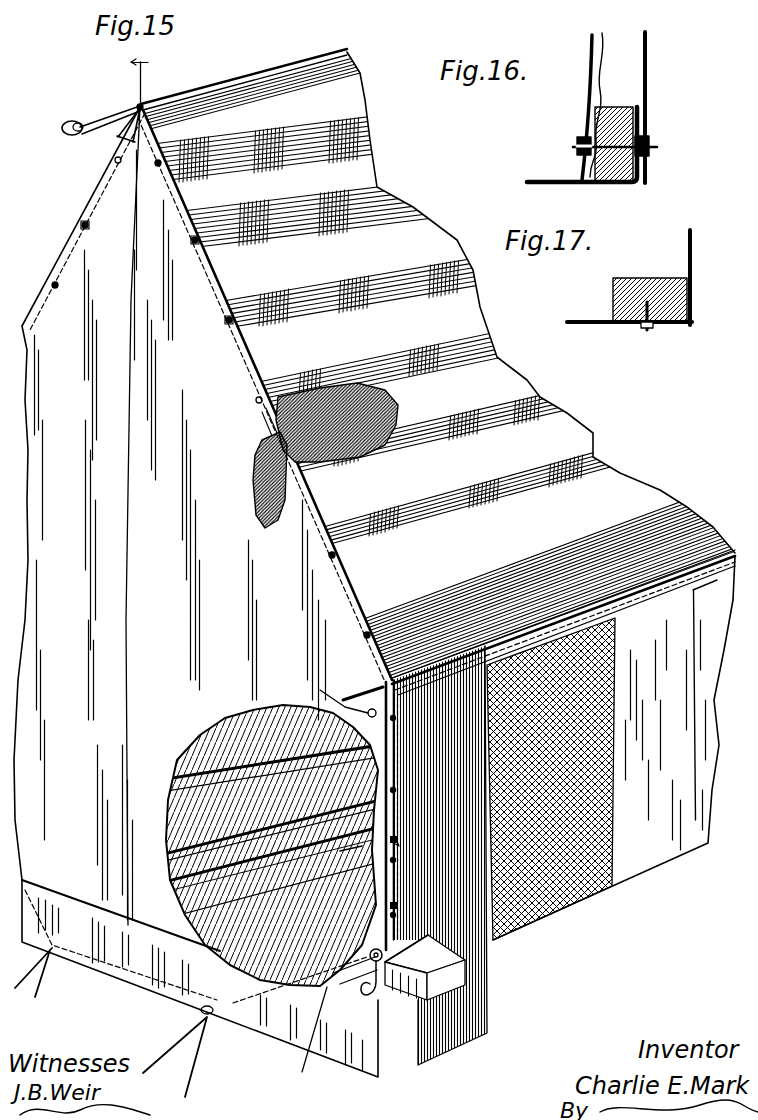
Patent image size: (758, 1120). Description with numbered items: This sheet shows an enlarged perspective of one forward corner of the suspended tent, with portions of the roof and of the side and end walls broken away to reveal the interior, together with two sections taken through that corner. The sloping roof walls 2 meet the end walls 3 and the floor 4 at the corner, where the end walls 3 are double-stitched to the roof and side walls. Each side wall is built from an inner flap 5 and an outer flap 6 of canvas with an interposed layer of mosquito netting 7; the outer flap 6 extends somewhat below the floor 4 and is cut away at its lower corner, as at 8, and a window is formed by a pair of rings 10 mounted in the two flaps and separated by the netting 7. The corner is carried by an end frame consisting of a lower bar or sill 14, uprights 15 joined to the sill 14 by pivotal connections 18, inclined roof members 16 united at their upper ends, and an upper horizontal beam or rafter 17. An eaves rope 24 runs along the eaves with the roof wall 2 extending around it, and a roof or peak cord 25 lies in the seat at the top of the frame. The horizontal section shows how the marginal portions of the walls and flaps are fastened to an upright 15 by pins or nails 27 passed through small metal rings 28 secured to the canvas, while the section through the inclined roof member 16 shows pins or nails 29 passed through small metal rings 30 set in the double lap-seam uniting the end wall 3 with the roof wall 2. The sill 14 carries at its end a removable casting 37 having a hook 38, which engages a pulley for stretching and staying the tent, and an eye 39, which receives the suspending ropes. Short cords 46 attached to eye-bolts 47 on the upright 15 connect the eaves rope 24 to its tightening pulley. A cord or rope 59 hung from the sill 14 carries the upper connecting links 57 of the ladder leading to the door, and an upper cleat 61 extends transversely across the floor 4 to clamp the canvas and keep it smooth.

In FIG. 15, the sloping roof walls 2 is at (478, 340).
In FIG. 15, the end walls 3 is at (196, 546).
In FIG. 16, the end walls 3 is at (552, 186).
In FIG. 17, the end walls 3 is at (592, 326).
In FIG. 15, the floor 4 is at (305, 900).
In FIG. 15, the inner flap 5 is at (480, 1018).
In FIG. 16, the inner flap 5 is at (648, 172).
In FIG. 15, the outer flap 6 is at (636, 872).
In FIG. 16, the outer flap 6 is at (584, 91).
In FIG. 15, the layer of mosquito netting 7 is at (567, 918).
In FIG. 16, the layer of mosquito netting 7 is at (601, 93).
In FIG. 15, the cut-away lower corner 8 is at (397, 1055).
In FIG. 15, the rings 10 is at (347, 840).
In FIG. 15, the sill 14 is at (458, 977).
In FIG. 16, the uprights 15 is at (624, 180).
In FIG. 15, the inclined roof members 16 is at (303, 390).
In FIG. 17, the inclined roof members 16 is at (690, 297).
In FIG. 15, the upper horizontal beam or rafter 17 is at (262, 438).
In FIG. 15, the pivotal connections 18 is at (145, 176).
In FIG. 15, the eaves ropes 24 is at (356, 695).
In FIG. 15, the roof or peak cord 25 is at (98, 118).
In FIG. 15, the pins or nails 27 is at (396, 718).
In FIG. 16, the pins or nails 27 is at (575, 148).
In FIG. 15, the small metal rings 28 is at (399, 838).
In FIG. 16, the small metal rings 28 is at (578, 141).
In FIG. 15, the pins or nails 29 is at (56, 290).
In FIG. 17, the pins or nails 29 is at (649, 332).
In FIG. 15, the small metal rings 30 is at (86, 230).
In FIG. 17, the small metal rings 30 is at (657, 327).
In FIG. 15, the removable rings or castings 37 is at (432, 938).
In FIG. 15, the hook 38 is at (368, 996).
In FIG. 15, the eye 39 is at (368, 956).
In FIG. 15, the short cords 46 is at (88, 133).
In FIG. 15, the eye-bolts 47 is at (137, 162).
In FIG. 15, the connecting links 57 is at (45, 988).
In FIG. 15, the cord or rope 59 is at (314, 1038).
In FIG. 15, the upper cleats 61 is at (240, 790).